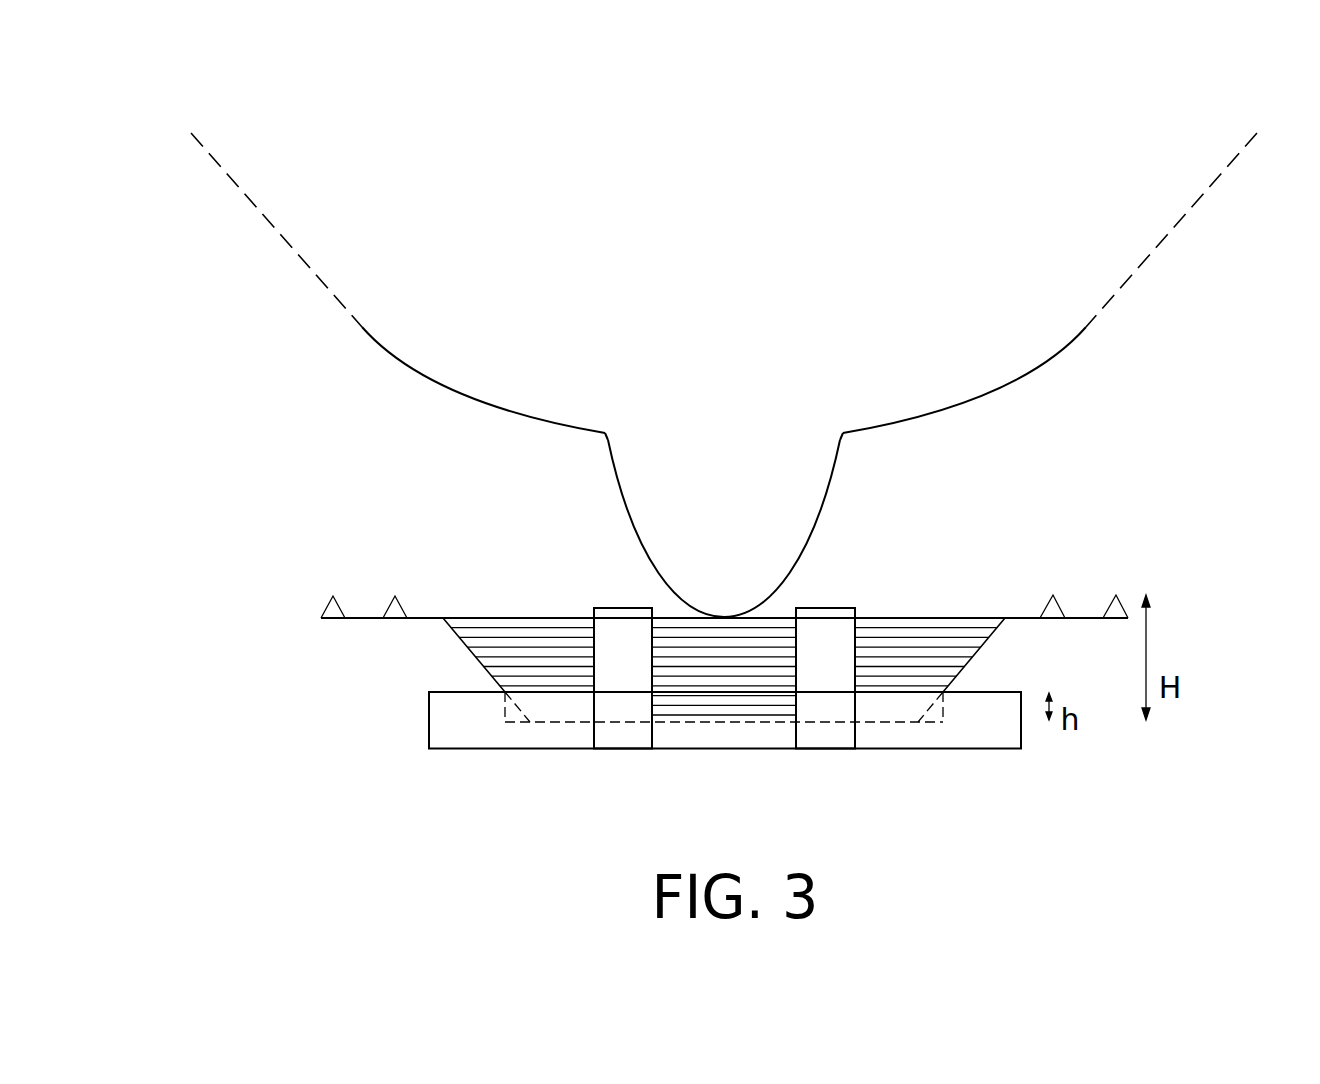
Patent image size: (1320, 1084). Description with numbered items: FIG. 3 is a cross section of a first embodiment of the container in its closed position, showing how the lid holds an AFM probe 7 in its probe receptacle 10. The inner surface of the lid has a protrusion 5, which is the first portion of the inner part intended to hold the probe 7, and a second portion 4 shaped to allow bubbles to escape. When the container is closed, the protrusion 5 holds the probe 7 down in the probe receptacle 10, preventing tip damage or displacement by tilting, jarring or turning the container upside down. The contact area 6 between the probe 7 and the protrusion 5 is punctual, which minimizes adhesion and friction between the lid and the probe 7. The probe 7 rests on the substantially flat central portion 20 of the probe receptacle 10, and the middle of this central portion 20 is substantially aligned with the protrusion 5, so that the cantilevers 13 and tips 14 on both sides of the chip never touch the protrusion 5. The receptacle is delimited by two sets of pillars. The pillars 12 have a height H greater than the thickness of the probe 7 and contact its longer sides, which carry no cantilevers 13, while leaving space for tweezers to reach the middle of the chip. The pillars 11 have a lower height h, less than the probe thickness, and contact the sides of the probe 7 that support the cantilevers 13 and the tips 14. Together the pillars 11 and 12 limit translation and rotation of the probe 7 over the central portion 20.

The second portion 4 is at (403, 357).
The protrusion 5 is at (667, 492).
The contact area 6 is at (742, 616).
The probe 7 is at (512, 614).
The probe receptacle 10 is at (625, 741).
The pillars 11 is at (443, 732).
The pillars 12 is at (827, 670).
The cantilevers 13 is at (440, 616).
The tips 14 is at (333, 608).
The central portion 20 is at (683, 737).